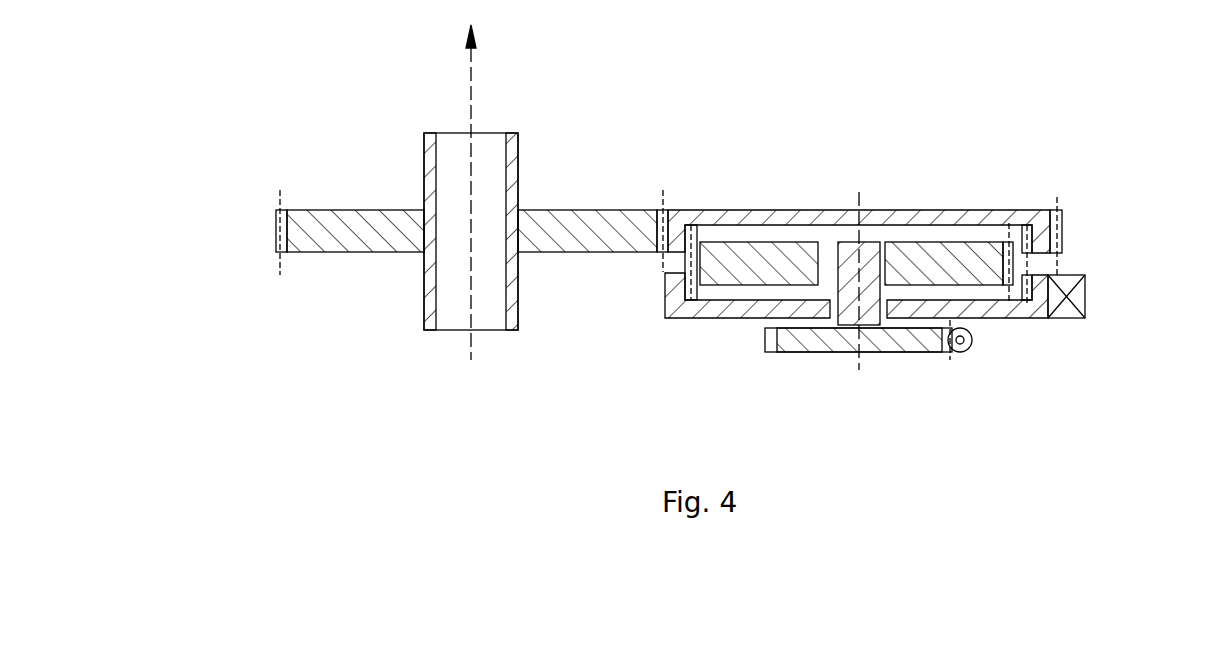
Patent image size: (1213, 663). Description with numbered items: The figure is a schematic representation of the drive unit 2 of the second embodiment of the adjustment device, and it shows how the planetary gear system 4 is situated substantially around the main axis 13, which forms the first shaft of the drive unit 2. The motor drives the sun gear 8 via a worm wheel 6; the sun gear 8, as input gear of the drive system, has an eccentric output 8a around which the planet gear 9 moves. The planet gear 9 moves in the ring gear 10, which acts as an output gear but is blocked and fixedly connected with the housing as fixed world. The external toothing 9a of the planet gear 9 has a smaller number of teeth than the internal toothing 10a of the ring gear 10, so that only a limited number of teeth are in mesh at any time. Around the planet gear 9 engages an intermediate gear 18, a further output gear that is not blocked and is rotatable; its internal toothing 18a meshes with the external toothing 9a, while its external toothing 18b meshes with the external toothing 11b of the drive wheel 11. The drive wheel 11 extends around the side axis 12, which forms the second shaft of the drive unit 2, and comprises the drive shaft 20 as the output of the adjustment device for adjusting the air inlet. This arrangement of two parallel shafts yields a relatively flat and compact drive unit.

The drive unit 2 is at (968, 162).
The planetary gear system 4 is at (920, 262).
The worm wheel 6 is at (960, 352).
The sun gear 8 is at (898, 338).
The eccentric output 8a is at (846, 258).
The planet gear 9 is at (920, 257).
The external toothing 9a is at (1007, 263).
The ring gear 10 is at (1083, 317).
The internal toothing 10a is at (1030, 298).
The drive wheel 11 is at (419, 206).
The external toothing 11b is at (278, 222).
The side axis 12 is at (470, 122).
The main axis 13 is at (858, 365).
The intermediate gear 18 is at (1033, 238).
The internal toothing 18a is at (1028, 227).
The external toothing 18b is at (670, 218).
The drive shaft 20 is at (518, 140).